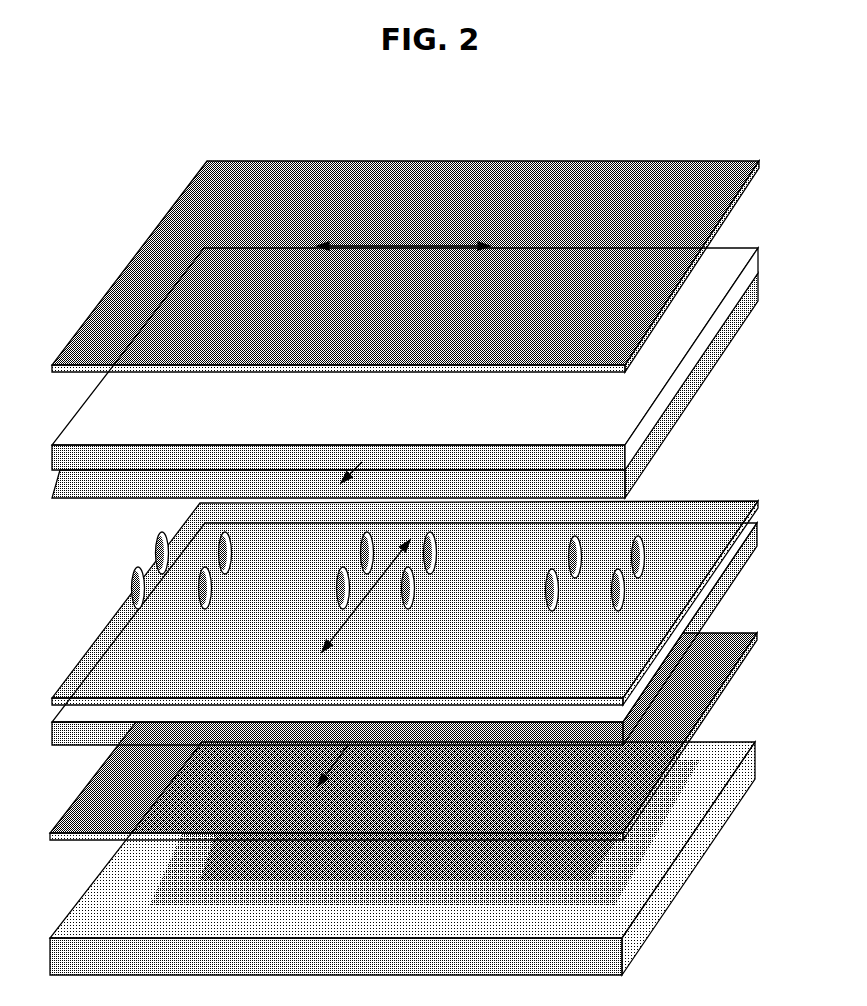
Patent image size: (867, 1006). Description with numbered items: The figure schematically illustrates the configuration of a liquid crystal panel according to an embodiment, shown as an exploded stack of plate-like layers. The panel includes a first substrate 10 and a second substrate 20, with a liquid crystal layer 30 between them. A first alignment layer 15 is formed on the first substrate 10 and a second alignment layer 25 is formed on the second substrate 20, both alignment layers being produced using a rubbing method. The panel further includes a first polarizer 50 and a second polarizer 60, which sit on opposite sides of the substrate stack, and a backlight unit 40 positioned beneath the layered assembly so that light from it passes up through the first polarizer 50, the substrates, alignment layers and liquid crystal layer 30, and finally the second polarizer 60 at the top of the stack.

The first substrate 10 is at (757, 525).
The first alignment layer 15 is at (717, 498).
The second substrate 20 is at (727, 251).
The second alignment layer 25 is at (733, 334).
The liquid crystal layer 30 is at (638, 535).
The backlight unit 40 is at (693, 863).
The first polarizer 50 is at (758, 650).
The second polarizer 60 is at (720, 163).